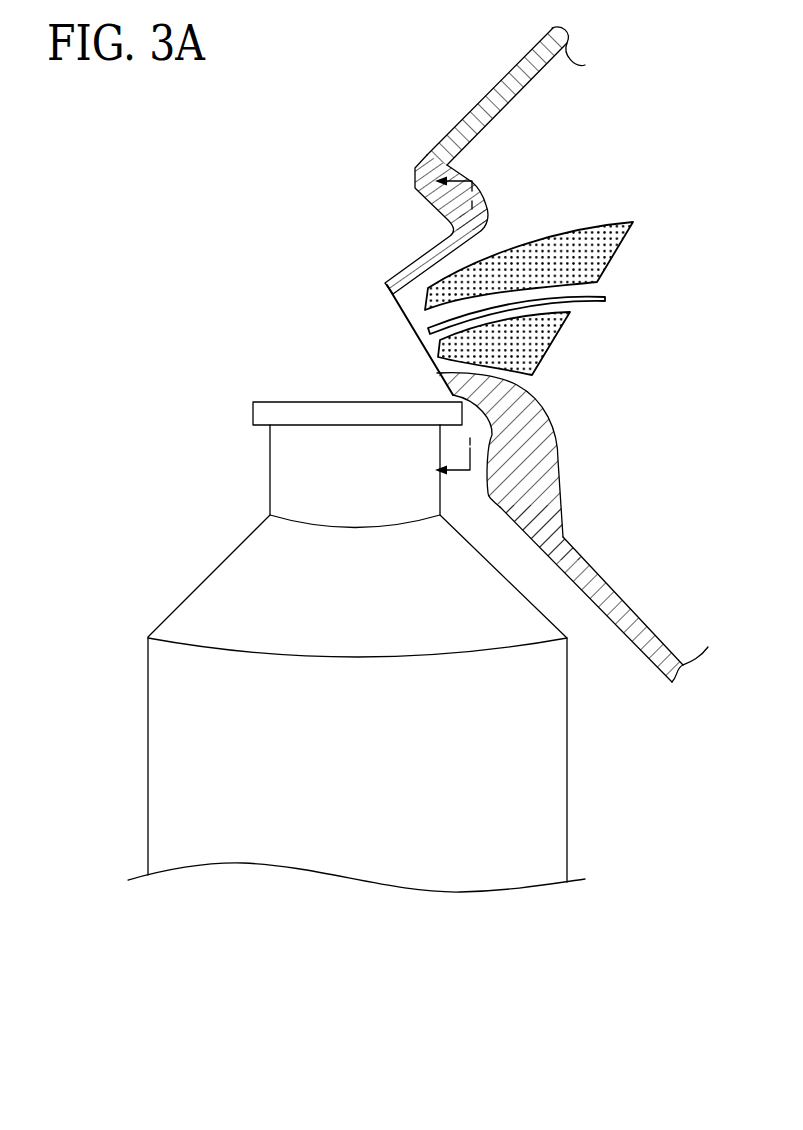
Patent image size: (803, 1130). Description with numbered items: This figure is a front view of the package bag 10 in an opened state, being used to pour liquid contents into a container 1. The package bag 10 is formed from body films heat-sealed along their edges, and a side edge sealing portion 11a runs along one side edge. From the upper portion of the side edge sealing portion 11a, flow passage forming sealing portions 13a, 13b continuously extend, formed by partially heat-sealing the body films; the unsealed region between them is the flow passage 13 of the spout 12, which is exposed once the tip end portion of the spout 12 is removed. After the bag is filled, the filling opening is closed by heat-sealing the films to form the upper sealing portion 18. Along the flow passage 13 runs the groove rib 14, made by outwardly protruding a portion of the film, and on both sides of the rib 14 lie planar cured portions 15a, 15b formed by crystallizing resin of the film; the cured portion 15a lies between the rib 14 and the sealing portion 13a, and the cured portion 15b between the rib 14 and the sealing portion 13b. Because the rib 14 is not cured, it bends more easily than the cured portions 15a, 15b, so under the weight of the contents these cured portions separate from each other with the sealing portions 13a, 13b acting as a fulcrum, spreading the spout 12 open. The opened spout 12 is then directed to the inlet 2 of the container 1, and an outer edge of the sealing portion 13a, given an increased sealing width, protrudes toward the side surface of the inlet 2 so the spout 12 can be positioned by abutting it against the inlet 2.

The container 1 is at (190, 577).
The inlet 2 is at (297, 404).
The package bag 10 is at (501, 367).
The side edge sealing portion 11a is at (625, 625).
The spout 12 is at (394, 225).
The flow passage 13 is at (405, 302).
The flow passage forming sealing portion 13a is at (500, 392).
The flow passage forming sealing portion 13b is at (405, 278).
The groove rib 14 is at (603, 298).
The cured portion 15a is at (538, 342).
The cured portion 15b is at (630, 243).
The upper sealing portion 18 is at (497, 98).